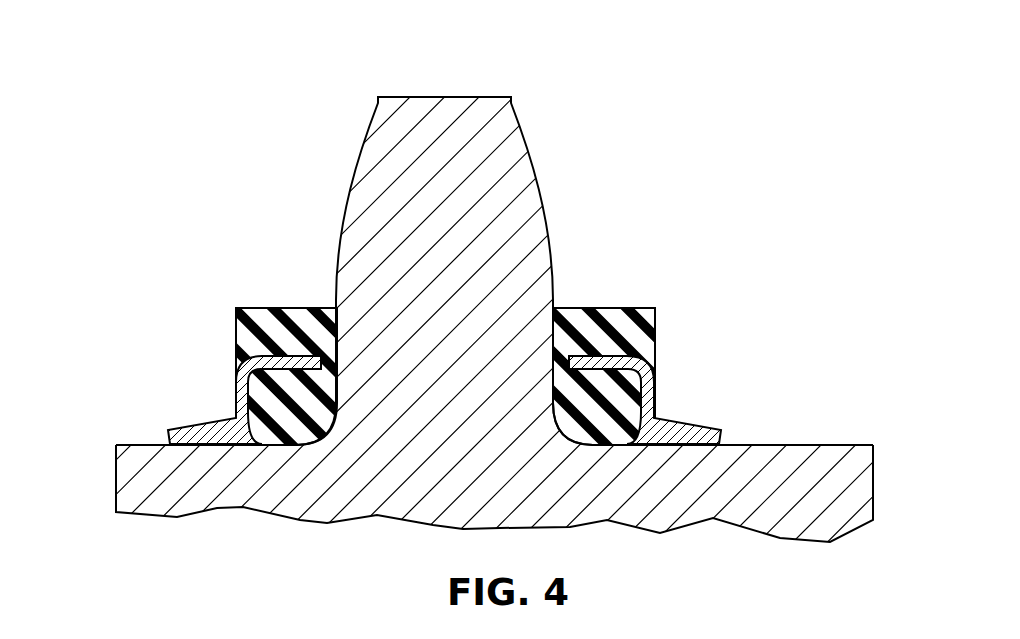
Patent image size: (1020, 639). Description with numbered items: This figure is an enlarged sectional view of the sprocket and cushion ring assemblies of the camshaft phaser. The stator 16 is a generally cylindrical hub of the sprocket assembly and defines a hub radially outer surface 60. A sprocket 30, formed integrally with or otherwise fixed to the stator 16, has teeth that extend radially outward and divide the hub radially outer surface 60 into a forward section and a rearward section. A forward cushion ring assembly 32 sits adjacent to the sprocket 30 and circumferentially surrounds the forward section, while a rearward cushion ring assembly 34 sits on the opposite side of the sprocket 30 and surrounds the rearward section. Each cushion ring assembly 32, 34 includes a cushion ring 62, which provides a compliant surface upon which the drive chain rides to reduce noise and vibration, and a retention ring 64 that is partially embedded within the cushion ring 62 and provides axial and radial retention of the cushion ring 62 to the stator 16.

The stator 16 is at (270, 503).
The sprocket 30 is at (418, 97).
The forward cushion ring assembly 32 is at (207, 313).
The rearward cushion ring assembly 34 is at (682, 313).
The hub radially outer surface 60 is at (143, 445).
The cushion ring 62 is at (282, 318).
The retention ring 64 is at (228, 417).